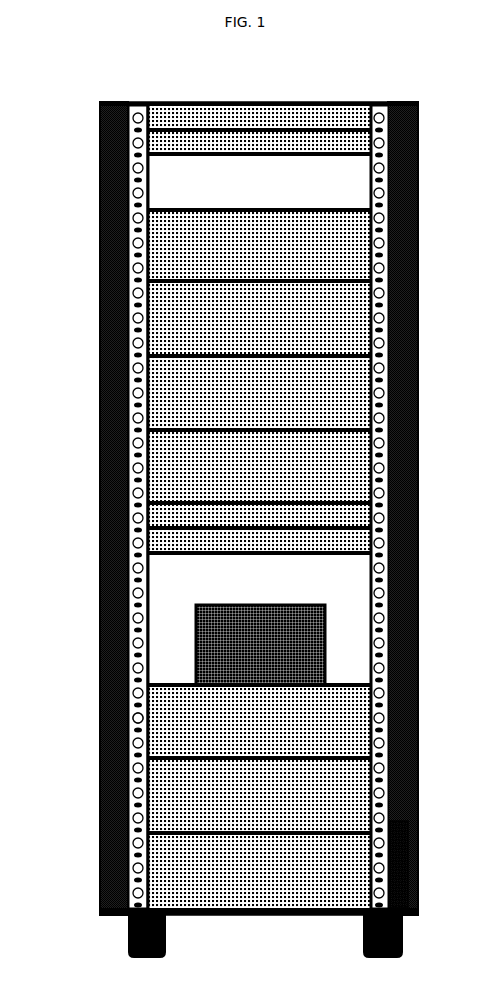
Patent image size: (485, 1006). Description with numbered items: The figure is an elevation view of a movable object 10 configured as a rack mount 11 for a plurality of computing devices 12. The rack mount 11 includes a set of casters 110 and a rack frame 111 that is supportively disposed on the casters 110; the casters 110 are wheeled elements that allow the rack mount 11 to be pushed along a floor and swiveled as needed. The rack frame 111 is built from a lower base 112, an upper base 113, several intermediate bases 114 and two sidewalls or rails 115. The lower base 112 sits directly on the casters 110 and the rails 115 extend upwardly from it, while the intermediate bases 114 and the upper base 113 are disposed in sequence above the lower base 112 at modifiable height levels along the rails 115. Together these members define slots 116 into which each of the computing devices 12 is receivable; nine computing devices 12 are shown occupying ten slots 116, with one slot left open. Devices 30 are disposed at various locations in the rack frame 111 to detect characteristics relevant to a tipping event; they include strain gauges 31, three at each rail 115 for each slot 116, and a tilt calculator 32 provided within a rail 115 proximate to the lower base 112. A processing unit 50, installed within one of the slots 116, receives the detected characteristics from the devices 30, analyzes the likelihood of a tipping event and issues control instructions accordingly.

The movable object 10 is at (92, 908).
The rack mount 11 is at (410, 907).
The computing devices 12 is at (150, 800).
The devices 30 is at (121, 572).
The strain gauges 31 is at (128, 707).
The tilt calculator 32 is at (390, 843).
The processing unit 50 is at (300, 621).
The casters 110 is at (120, 940).
The rack frame 111 is at (108, 876).
The lower base 112 is at (276, 904).
The upper base 113 is at (175, 94).
The intermediate bases 114 is at (314, 202).
The rails 115 is at (122, 748).
The slots 116 is at (198, 741).